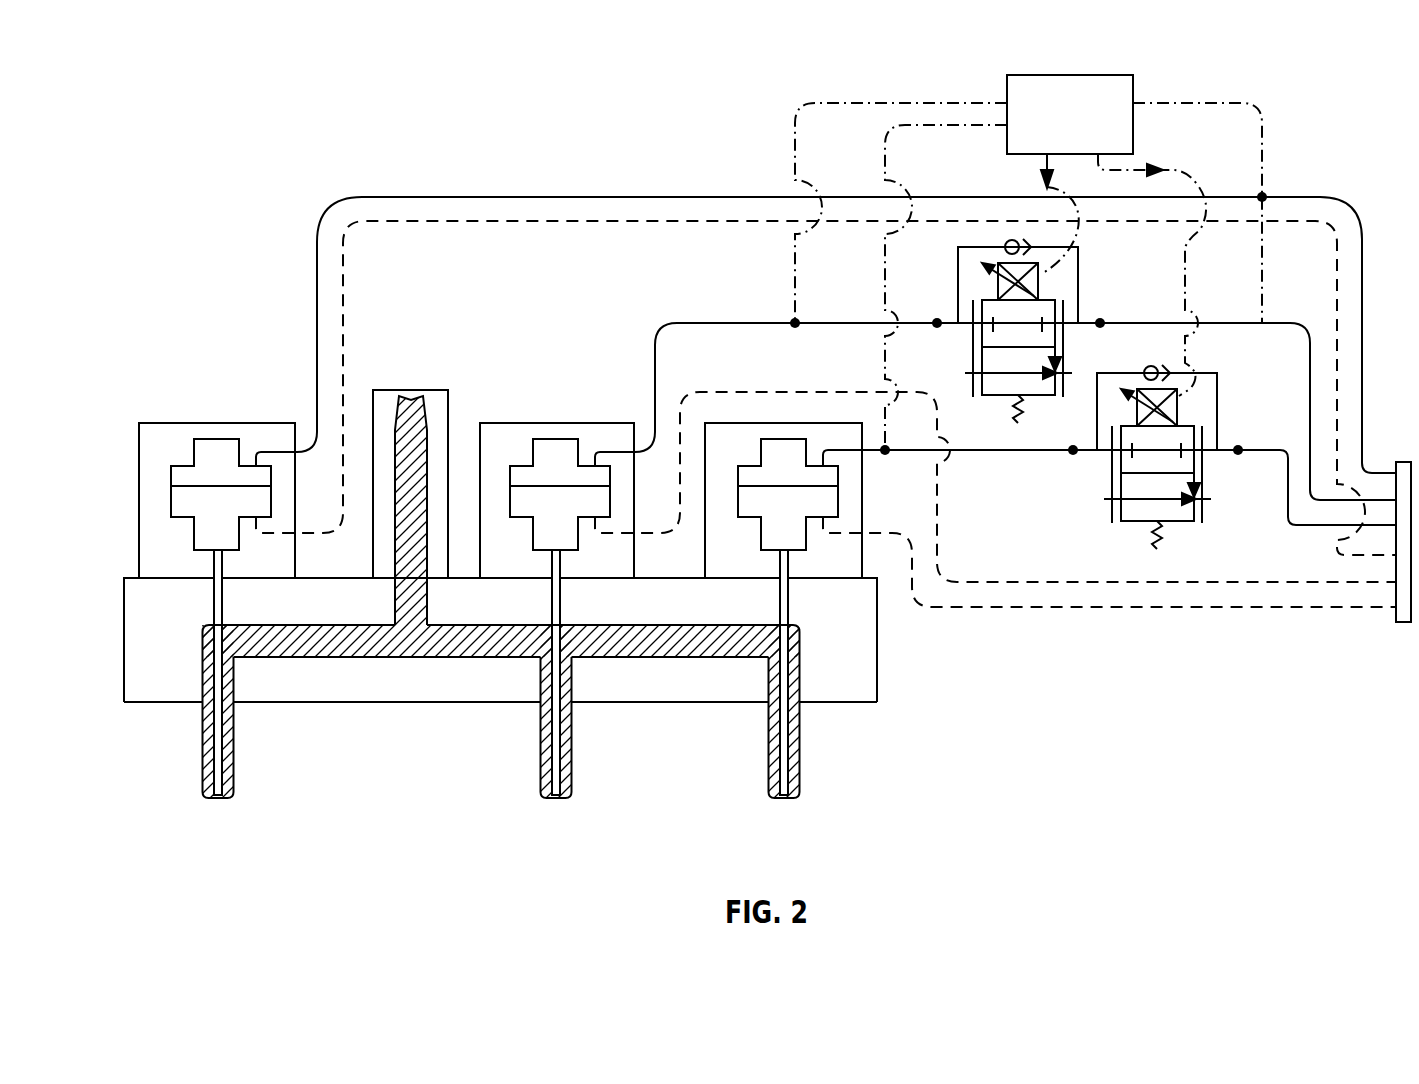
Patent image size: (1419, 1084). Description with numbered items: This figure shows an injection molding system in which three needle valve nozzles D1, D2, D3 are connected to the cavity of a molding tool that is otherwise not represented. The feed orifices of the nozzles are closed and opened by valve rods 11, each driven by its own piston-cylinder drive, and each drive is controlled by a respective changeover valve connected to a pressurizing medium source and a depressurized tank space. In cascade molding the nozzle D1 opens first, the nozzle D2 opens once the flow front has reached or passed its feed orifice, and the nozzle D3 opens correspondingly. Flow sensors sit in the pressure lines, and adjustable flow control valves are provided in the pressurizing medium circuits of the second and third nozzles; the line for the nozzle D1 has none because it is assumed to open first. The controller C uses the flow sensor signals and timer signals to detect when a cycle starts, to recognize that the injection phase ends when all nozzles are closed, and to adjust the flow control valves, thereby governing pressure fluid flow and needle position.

The valve rod 11 is at (210, 605).
The needle valve nozzle D1 is at (240, 811).
The needle valve nozzle D2 is at (579, 811).
The needle valve nozzle D3 is at (807, 811).
The controller C is at (1070, 114).